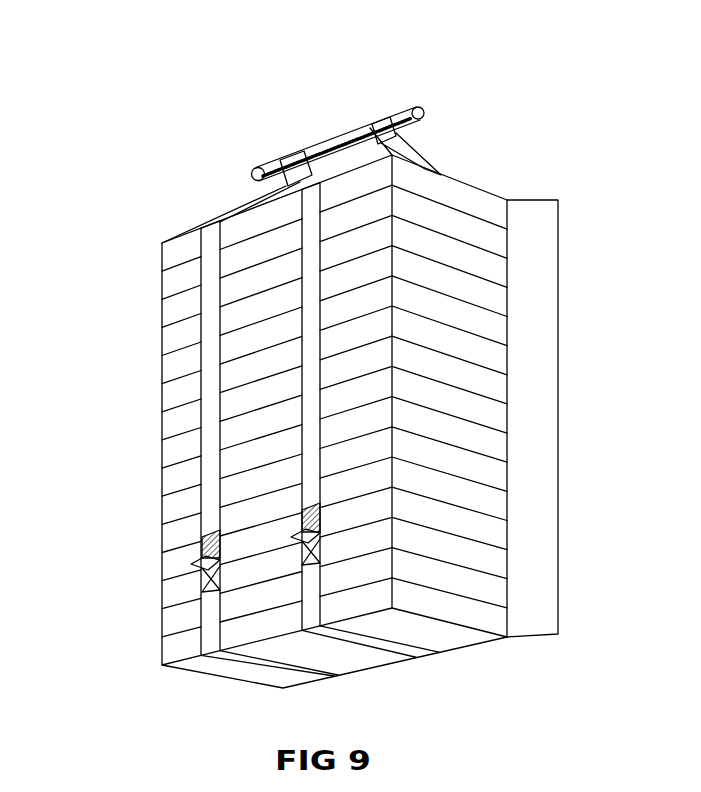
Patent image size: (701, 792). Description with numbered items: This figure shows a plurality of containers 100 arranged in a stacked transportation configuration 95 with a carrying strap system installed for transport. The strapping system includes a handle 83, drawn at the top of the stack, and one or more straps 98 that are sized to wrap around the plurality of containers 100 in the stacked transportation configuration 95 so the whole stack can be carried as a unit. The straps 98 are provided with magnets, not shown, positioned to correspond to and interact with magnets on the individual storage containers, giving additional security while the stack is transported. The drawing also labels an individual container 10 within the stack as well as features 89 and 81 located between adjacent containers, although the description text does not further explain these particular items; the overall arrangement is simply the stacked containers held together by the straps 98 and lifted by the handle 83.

The stacked panel blocks 10 is at (160, 481).
The strap 98 is at (203, 407).
The plurality of containers 100 is at (560, 398).
The clamp block 89 is at (199, 551).
The bracket 81 is at (201, 583).
The handle 83 is at (431, 118).
The stacked transportation configuration 95 is at (154, 177).